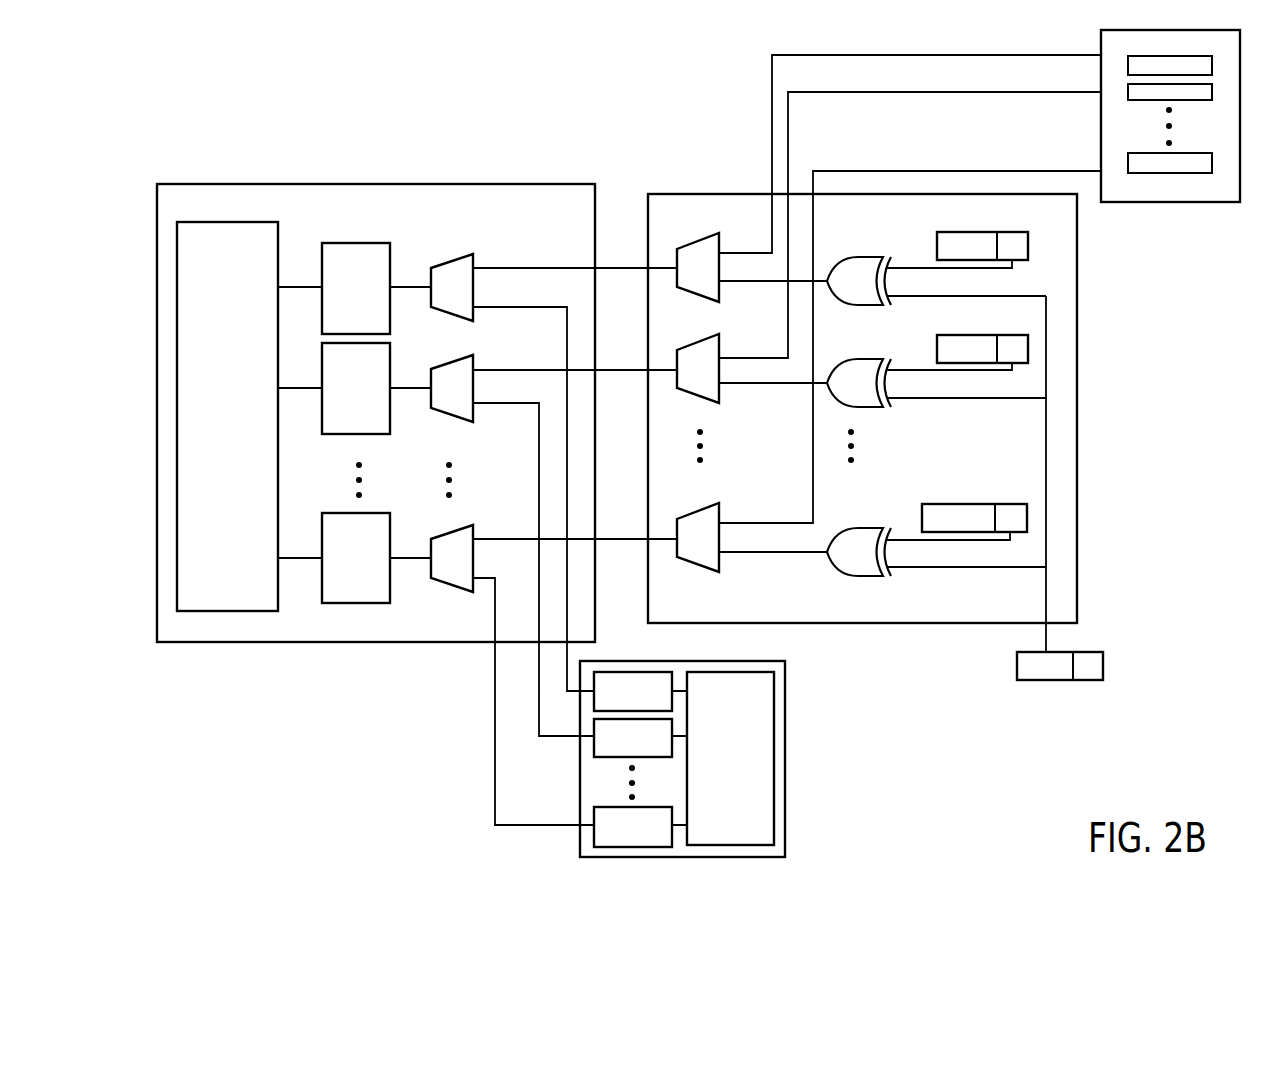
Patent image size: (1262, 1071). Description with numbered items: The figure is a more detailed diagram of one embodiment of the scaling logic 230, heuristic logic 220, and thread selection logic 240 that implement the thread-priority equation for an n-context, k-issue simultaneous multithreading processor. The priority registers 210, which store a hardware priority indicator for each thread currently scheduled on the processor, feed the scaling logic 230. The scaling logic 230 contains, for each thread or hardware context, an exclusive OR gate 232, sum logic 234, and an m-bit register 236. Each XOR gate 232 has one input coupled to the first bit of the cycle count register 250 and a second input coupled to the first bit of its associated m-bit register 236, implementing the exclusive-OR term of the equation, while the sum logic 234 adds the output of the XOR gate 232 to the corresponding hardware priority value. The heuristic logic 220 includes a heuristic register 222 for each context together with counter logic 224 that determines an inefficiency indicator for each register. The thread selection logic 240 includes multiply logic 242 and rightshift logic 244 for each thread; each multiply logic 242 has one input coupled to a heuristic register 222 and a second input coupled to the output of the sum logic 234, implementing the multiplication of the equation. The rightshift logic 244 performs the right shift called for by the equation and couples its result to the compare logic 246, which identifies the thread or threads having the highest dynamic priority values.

The priority registers 210 is at (1178, 214).
The heuristic logic 220 is at (797, 763).
The heuristic register 222 is at (633, 759).
The counter logic 224 is at (714, 797).
The scaling logic 230 is at (1087, 461).
The exclusive OR (XOR) gate 232 is at (866, 400).
The sum logic 234 is at (700, 389).
The m-bit register 236 is at (1046, 369).
The thread selection logic 240 is at (304, 176).
The multiply logic 242 is at (466, 424).
The rightshift logic 244 is at (337, 416).
The compare logic 246 is at (211, 442).
The cycle count register 250 is at (1103, 665).